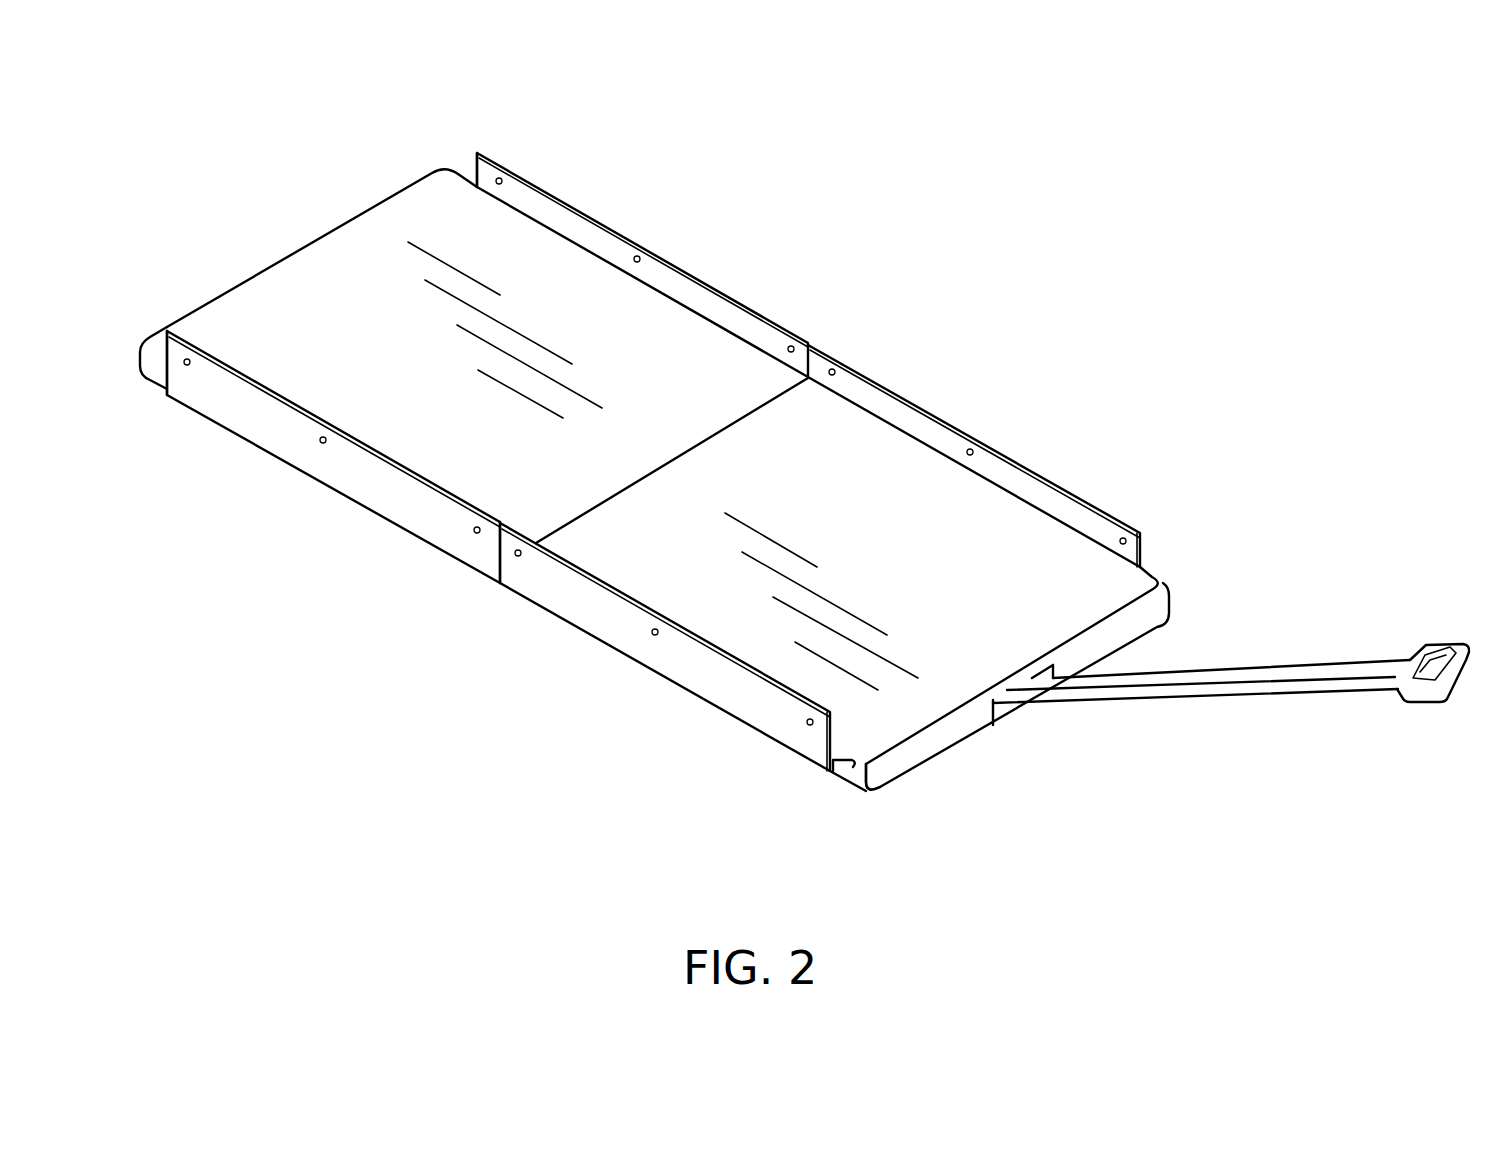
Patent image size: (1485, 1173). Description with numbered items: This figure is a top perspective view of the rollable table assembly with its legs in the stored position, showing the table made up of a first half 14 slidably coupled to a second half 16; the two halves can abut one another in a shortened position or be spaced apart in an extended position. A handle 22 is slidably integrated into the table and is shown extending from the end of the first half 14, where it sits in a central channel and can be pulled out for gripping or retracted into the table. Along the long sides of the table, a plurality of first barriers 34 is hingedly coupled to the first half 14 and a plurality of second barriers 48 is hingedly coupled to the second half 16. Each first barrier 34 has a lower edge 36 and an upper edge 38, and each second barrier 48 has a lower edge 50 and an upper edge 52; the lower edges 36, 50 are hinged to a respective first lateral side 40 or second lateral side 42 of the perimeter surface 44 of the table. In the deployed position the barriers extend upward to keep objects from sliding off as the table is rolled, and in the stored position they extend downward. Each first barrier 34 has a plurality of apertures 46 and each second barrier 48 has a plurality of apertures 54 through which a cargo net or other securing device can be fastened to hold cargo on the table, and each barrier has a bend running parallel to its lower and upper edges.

The first half 14 is at (1007, 522).
The second half 16 is at (672, 347).
The handle 22 is at (1352, 668).
The first barriers 34 is at (1128, 523).
The lower edge 36 is at (568, 195).
The upper edge 38 is at (560, 553).
The first lateral side 40 is at (853, 788).
The second lateral side 42 is at (1162, 585).
The perimeter surface 44 is at (843, 763).
The apertures 46 is at (970, 450).
The second barriers 48 is at (478, 150).
The lower edge 50 is at (390, 523).
The upper edge 52 is at (273, 388).
The apertures 54 is at (322, 441).